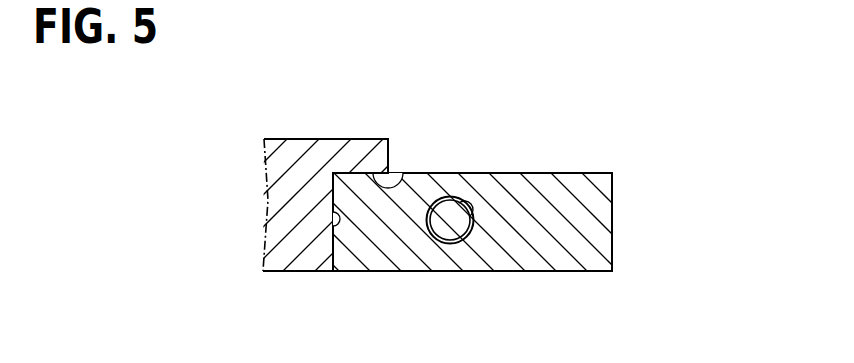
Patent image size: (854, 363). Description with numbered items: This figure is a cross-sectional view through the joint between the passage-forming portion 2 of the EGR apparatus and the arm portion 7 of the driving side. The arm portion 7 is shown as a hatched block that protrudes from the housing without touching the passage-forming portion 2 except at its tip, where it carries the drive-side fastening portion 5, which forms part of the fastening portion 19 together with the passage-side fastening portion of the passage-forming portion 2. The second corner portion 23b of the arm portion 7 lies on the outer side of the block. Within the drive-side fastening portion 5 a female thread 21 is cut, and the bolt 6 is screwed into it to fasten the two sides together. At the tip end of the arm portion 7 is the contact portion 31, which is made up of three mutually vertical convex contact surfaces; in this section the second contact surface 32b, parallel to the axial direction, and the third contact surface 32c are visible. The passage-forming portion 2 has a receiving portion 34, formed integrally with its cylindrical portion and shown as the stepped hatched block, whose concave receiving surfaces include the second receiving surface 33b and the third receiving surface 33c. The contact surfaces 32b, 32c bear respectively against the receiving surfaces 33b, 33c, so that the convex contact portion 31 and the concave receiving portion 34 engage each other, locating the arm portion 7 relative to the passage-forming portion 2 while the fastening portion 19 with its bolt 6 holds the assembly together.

The passage-forming portion 2 is at (268, 133).
The receiving portion 34 is at (330, 162).
The third contact surface 32c is at (366, 163).
The third receiving surface 33c is at (405, 196).
The female thread 21 is at (458, 197).
The arm portion 7 is at (533, 169).
The second receiving surface 33b is at (332, 223).
The second corner portion 23b is at (590, 219).
The second contact surface 32b is at (331, 247).
The contact portion 31 is at (363, 218).
The bolt 6 is at (445, 222).
The drive-side fastening portion 5 is at (503, 258).
The fastening portion 19 is at (503, 258).